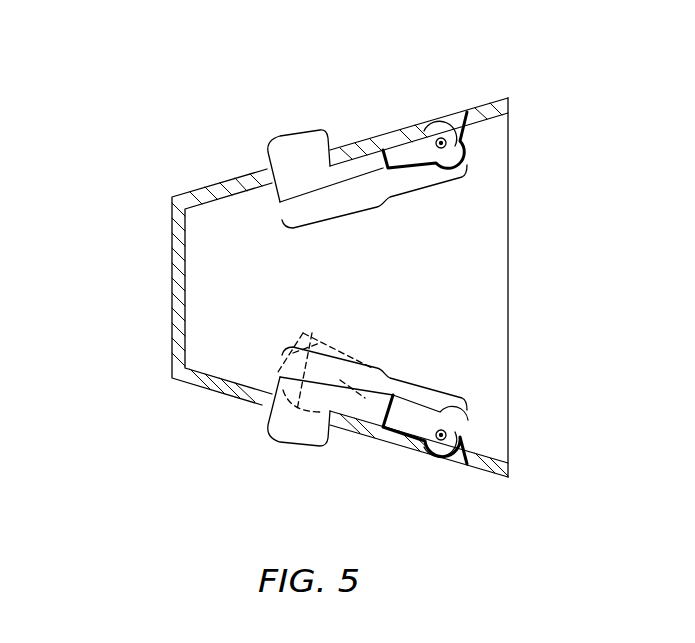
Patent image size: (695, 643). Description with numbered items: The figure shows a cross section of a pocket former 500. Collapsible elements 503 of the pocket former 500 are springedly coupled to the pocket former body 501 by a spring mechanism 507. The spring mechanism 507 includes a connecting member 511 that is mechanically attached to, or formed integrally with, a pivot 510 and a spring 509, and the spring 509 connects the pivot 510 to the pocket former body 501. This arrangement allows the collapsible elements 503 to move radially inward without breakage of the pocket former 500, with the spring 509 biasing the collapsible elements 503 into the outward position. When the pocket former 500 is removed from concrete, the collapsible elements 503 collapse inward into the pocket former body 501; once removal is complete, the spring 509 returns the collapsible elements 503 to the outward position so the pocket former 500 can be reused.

The pocket former 500 is at (132, 166).
The pocket former body 501 is at (170, 283).
The collapsible elements 503 is at (302, 132).
The spring mechanism 507 is at (384, 210).
The spring 509 is at (465, 152).
The pivot 510 is at (470, 416).
The connecting member 511 is at (347, 432).